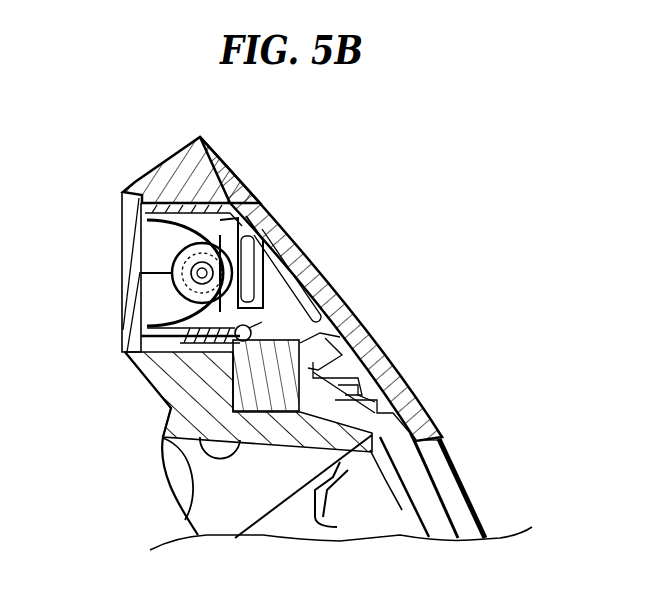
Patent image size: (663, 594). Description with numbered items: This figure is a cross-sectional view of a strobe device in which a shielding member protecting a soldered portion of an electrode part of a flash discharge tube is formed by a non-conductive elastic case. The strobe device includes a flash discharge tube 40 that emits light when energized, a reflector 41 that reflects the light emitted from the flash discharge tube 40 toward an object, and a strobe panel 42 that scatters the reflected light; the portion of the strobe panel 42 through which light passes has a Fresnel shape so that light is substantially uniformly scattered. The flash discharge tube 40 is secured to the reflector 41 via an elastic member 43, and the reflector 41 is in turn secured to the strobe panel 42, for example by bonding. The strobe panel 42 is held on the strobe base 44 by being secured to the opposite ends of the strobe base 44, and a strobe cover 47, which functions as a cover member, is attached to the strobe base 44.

The flash discharge tube 40 is at (250, 212).
The reflector 41 is at (205, 203).
The strobe panel 42 is at (122, 273).
The elastic member 43 is at (243, 280).
The strobe base 44 is at (158, 438).
The strobe cover 47 is at (352, 307).